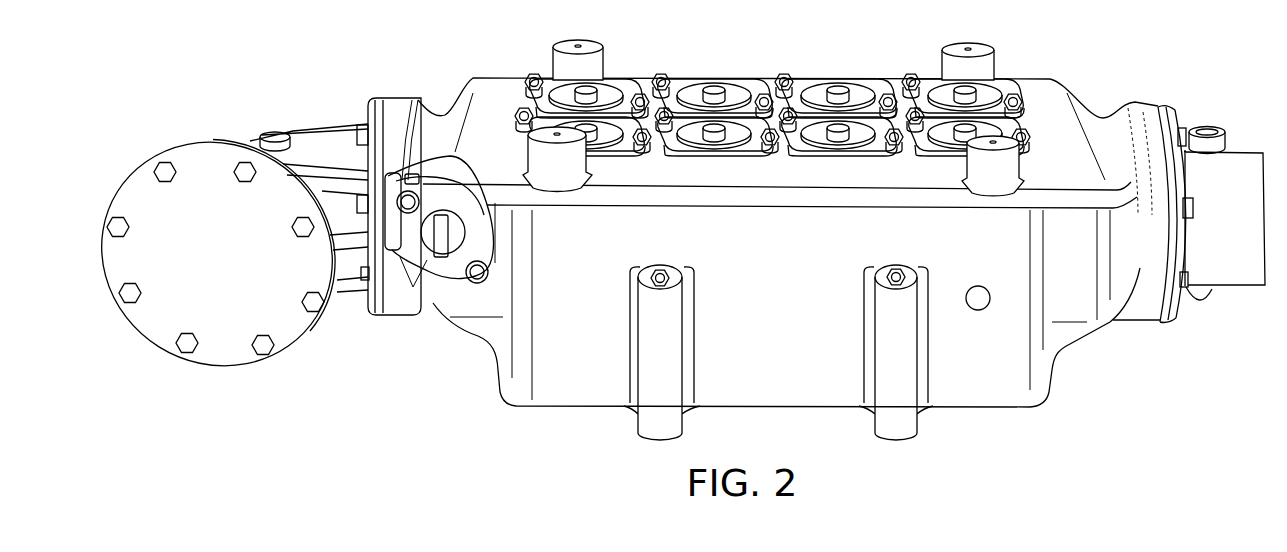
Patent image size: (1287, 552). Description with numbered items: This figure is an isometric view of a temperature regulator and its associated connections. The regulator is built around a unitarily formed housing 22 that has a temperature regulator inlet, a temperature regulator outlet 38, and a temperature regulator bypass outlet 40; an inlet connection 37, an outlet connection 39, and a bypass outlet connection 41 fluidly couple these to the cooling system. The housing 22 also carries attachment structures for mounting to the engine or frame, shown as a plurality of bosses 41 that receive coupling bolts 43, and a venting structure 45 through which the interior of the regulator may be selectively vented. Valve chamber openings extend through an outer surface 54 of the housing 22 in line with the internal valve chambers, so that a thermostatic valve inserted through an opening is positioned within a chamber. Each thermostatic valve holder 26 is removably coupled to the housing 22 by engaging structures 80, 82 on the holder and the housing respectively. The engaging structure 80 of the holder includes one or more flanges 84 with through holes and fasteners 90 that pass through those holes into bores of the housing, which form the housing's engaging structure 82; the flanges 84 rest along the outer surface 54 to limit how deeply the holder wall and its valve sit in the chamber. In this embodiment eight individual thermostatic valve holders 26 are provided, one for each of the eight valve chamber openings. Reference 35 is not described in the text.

The housing 22 is at (1110, 325).
The thermostatic valve holder 26 is at (818, 85).
The valve assembly 35 is at (740, 78).
The inlet connection 37 is at (330, 126).
The temperature regulator outlet 38 is at (385, 100).
The outlet connection 39 is at (1243, 150).
The temperature regulator bypass outlet 40 is at (1160, 105).
The bypass outlet connection / boss 41 is at (960, 50).
The coupling bolt 43 is at (660, 270).
The venting structure 45 is at (430, 265).
The outer surface 54 is at (1024, 127).
The engaging structure 80 is at (627, 98).
The engaging structure 82 is at (525, 75).
The flange 84 is at (678, 80).
The fastener 90 is at (786, 72).